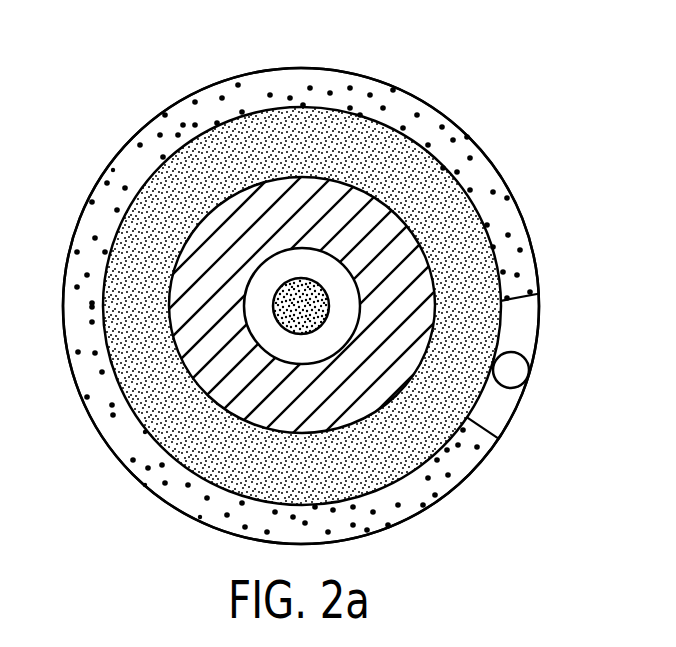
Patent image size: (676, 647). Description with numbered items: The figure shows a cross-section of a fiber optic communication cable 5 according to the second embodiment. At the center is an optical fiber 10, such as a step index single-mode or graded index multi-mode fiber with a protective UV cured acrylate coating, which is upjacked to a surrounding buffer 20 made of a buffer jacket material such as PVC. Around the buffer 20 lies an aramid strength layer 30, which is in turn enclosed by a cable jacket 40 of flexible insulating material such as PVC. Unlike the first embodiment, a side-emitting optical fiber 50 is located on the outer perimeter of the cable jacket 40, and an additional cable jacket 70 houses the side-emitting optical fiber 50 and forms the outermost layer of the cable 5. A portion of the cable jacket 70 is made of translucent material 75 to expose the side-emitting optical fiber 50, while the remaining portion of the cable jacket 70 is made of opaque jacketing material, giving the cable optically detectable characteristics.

The fiber optic communication cable 5 is at (490, 75).
The optical fiber 10 is at (303, 335).
The buffer 20 is at (308, 365).
The aramid strength layer 30 is at (173, 275).
The cable jacket 40 is at (148, 175).
The side-emitting optical fiber 50 is at (518, 371).
The cable jacket 70 is at (480, 467).
The translucent material 75 is at (507, 408).